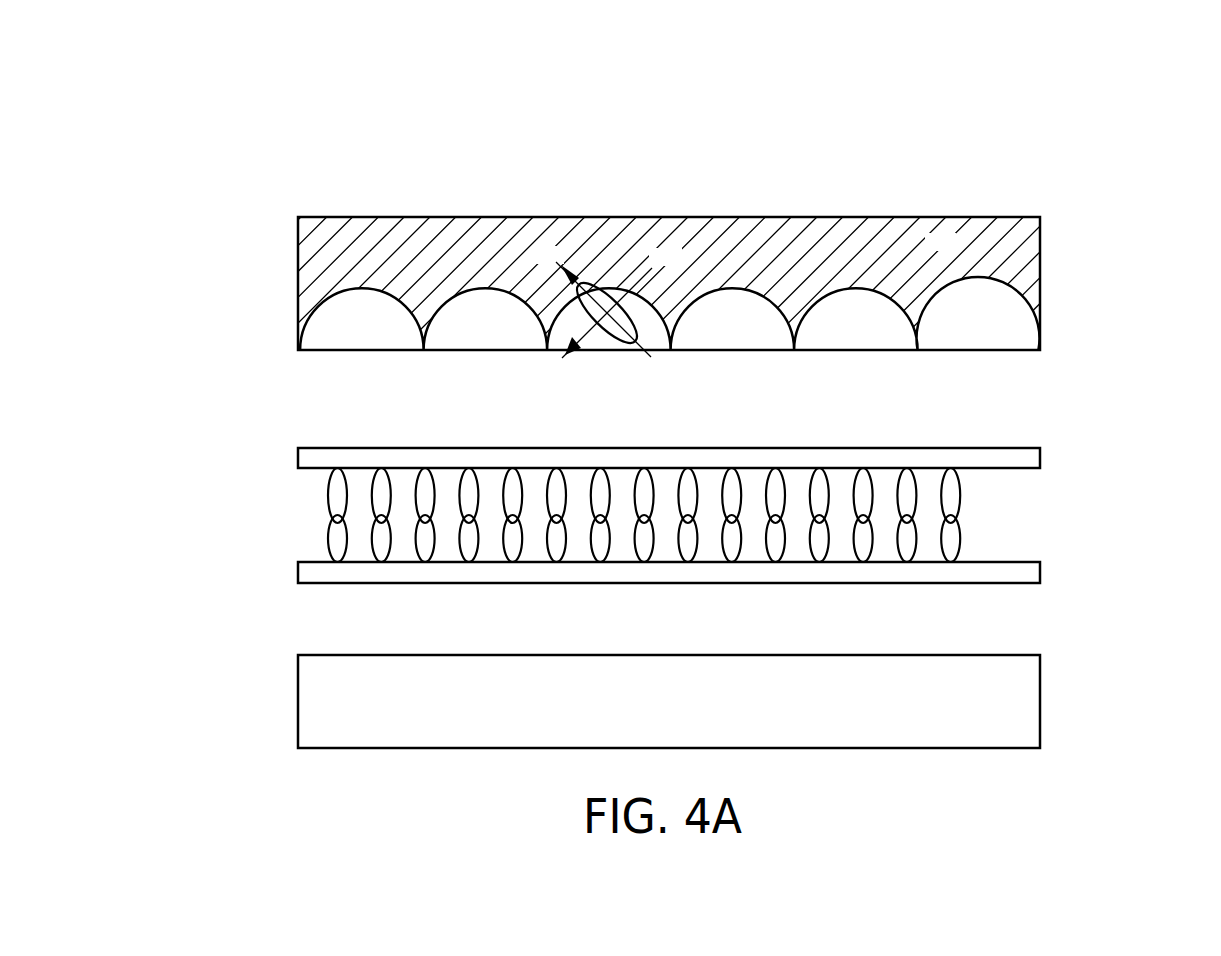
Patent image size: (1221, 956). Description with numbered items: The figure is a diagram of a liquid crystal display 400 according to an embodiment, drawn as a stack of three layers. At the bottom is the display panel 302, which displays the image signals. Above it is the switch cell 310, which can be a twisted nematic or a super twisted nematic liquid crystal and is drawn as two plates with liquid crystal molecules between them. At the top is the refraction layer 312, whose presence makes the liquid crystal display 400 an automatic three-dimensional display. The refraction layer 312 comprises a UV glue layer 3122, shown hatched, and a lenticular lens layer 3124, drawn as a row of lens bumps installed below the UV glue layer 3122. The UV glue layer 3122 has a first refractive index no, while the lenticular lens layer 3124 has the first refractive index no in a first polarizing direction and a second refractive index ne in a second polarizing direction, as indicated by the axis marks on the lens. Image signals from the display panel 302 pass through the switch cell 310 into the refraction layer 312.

The liquid crystal display 400 is at (681, 413).
The refraction layer 312 is at (673, 287).
The UV glue layer 3122 is at (314, 245).
The lenticular lens layer 3124 is at (326, 325).
The switch cell 310 is at (1077, 448).
The display panel 302 is at (985, 748).